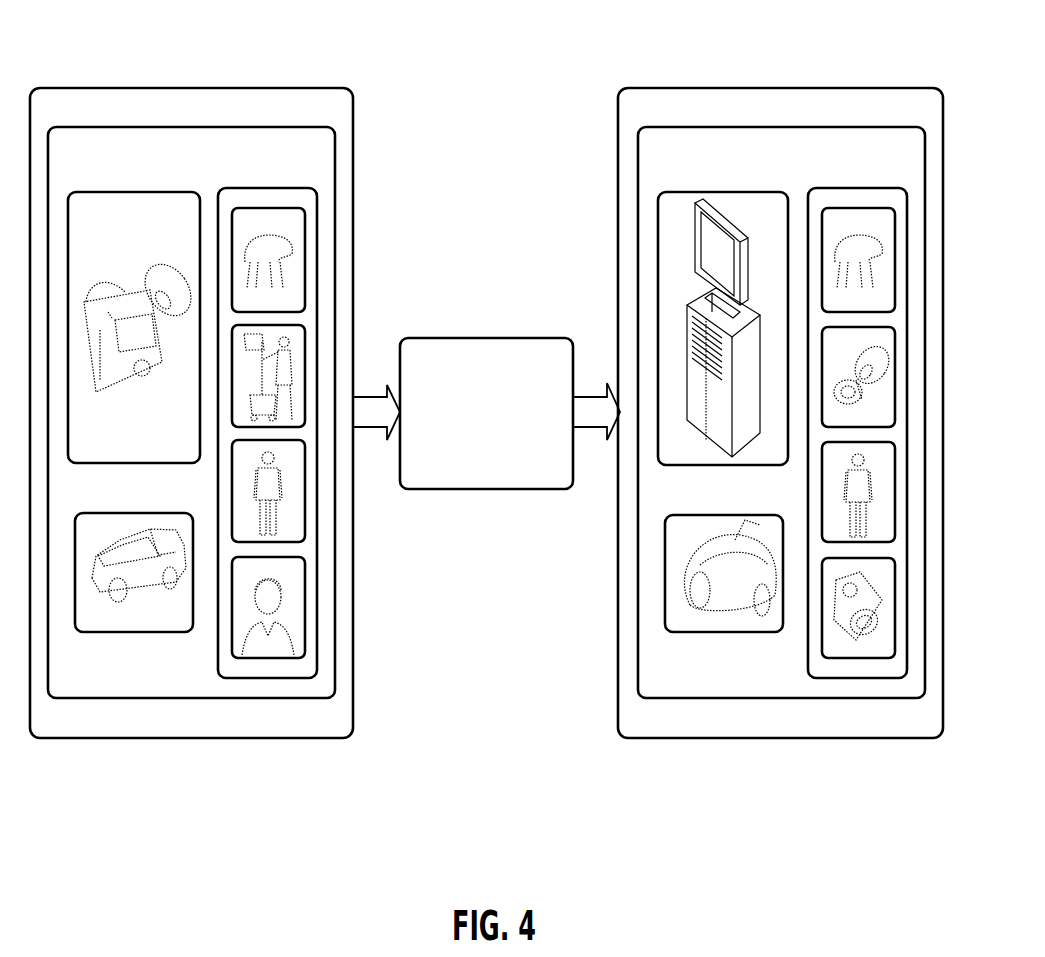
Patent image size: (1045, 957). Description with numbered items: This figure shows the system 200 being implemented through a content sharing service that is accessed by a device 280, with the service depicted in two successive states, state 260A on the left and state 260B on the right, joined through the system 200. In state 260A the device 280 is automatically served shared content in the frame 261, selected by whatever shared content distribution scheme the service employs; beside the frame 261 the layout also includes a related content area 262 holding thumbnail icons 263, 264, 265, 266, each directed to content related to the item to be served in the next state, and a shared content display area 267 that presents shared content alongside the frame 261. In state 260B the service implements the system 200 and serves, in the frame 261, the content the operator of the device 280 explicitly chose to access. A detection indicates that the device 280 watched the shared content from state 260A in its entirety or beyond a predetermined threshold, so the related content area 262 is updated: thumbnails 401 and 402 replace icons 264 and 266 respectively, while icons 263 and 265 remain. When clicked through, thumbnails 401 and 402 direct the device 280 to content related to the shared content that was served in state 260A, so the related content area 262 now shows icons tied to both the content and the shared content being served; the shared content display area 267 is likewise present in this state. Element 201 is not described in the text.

The system 200 is at (487, 338).
The content sharing server 201 is at (658, 266).
The first state of the content sharing service 260A is at (190, 127).
The second state of the content sharing service 260B is at (780, 127).
The frame 261 is at (90, 192).
The related content area 262 is at (267, 678).
The thumbnail icon 263 is at (305, 262).
The thumbnail icon 264 is at (305, 375).
The thumbnail icon 265 is at (305, 491).
The thumbnail icon 266 is at (305, 607).
The shared content display area 267 is at (135, 632).
The device 280 is at (295, 88).
The thumbnail 401 is at (897, 378).
The thumbnail 402 is at (837, 658).